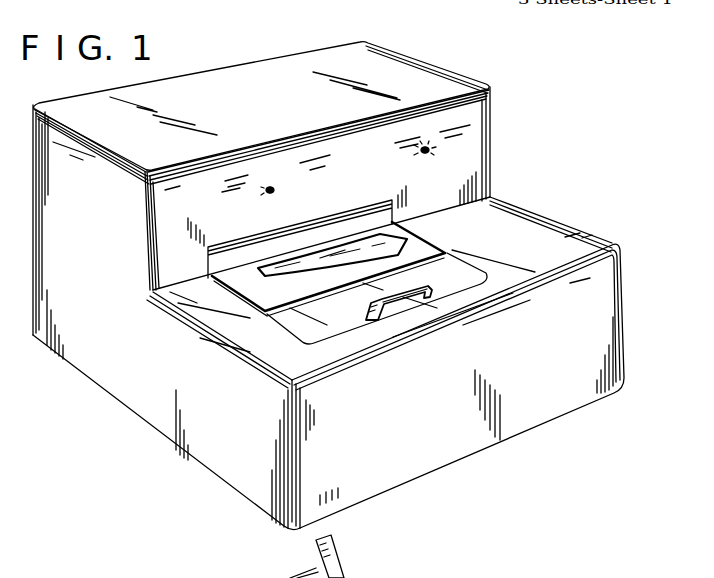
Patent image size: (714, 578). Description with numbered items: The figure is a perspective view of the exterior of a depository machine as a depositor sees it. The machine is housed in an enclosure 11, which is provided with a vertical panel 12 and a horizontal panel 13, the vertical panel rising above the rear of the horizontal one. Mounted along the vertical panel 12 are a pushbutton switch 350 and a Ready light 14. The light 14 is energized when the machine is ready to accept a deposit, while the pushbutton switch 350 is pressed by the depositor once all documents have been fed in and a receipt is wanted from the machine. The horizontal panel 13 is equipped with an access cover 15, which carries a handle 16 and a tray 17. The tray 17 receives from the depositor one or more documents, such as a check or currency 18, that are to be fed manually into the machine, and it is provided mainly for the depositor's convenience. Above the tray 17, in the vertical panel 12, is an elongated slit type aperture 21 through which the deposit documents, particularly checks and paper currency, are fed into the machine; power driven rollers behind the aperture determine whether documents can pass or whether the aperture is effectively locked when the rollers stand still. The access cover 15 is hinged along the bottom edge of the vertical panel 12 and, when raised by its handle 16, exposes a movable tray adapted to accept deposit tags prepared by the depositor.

The enclosure 11 is at (447, 70).
The vertical panel 12 is at (475, 153).
The horizontal panel 13 is at (530, 222).
The Ready light 14 is at (430, 146).
The access cover 15 is at (462, 272).
The handle 16 is at (367, 306).
The tray 17 is at (443, 251).
The check or currency 18 is at (393, 243).
The elongated slit type aperture 21 is at (208, 262).
The pushbutton switch 350 is at (273, 187).